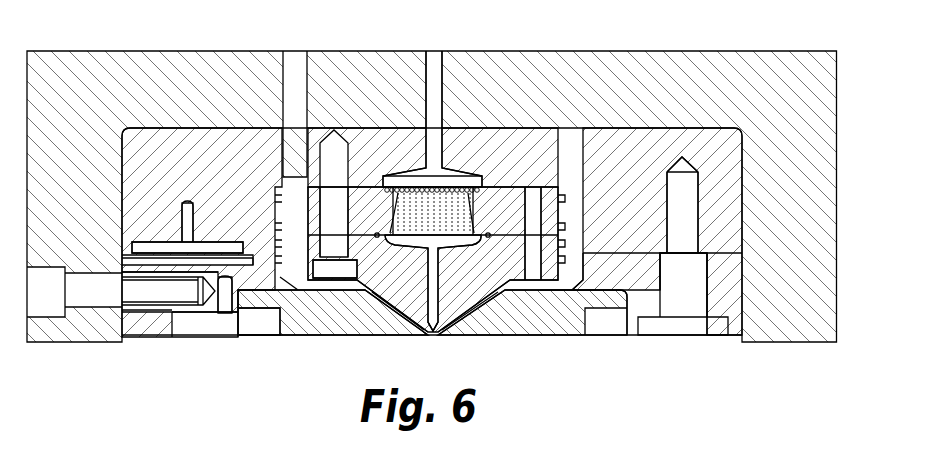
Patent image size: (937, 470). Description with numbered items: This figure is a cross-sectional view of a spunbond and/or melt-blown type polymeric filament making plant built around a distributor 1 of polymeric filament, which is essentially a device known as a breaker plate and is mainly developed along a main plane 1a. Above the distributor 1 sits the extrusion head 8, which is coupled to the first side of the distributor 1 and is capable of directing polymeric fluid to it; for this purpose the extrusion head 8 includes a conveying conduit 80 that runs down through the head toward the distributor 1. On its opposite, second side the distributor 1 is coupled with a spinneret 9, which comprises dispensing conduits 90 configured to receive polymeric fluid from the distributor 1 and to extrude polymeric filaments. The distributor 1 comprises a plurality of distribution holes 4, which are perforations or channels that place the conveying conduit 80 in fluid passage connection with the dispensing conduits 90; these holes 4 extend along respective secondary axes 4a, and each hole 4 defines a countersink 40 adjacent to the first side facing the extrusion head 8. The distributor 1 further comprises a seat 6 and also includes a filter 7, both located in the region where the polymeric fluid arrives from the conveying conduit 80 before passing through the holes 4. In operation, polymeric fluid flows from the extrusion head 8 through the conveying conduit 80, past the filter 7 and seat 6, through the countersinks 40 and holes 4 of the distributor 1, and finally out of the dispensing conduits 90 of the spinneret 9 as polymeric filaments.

The extrusion head 8 is at (379, 116).
The conveying conduit 80 is at (432, 75).
The distributor 1 is at (543, 153).
The main plane 1a is at (308, 182).
The seat 6 is at (480, 177).
The filter 7 is at (447, 196).
The countersink 40 is at (487, 194).
The distribution holes 4 is at (422, 207).
The secondary axes 4a is at (468, 212).
The spinneret 9 is at (372, 290).
The dispensing conduits 90 is at (433, 303).